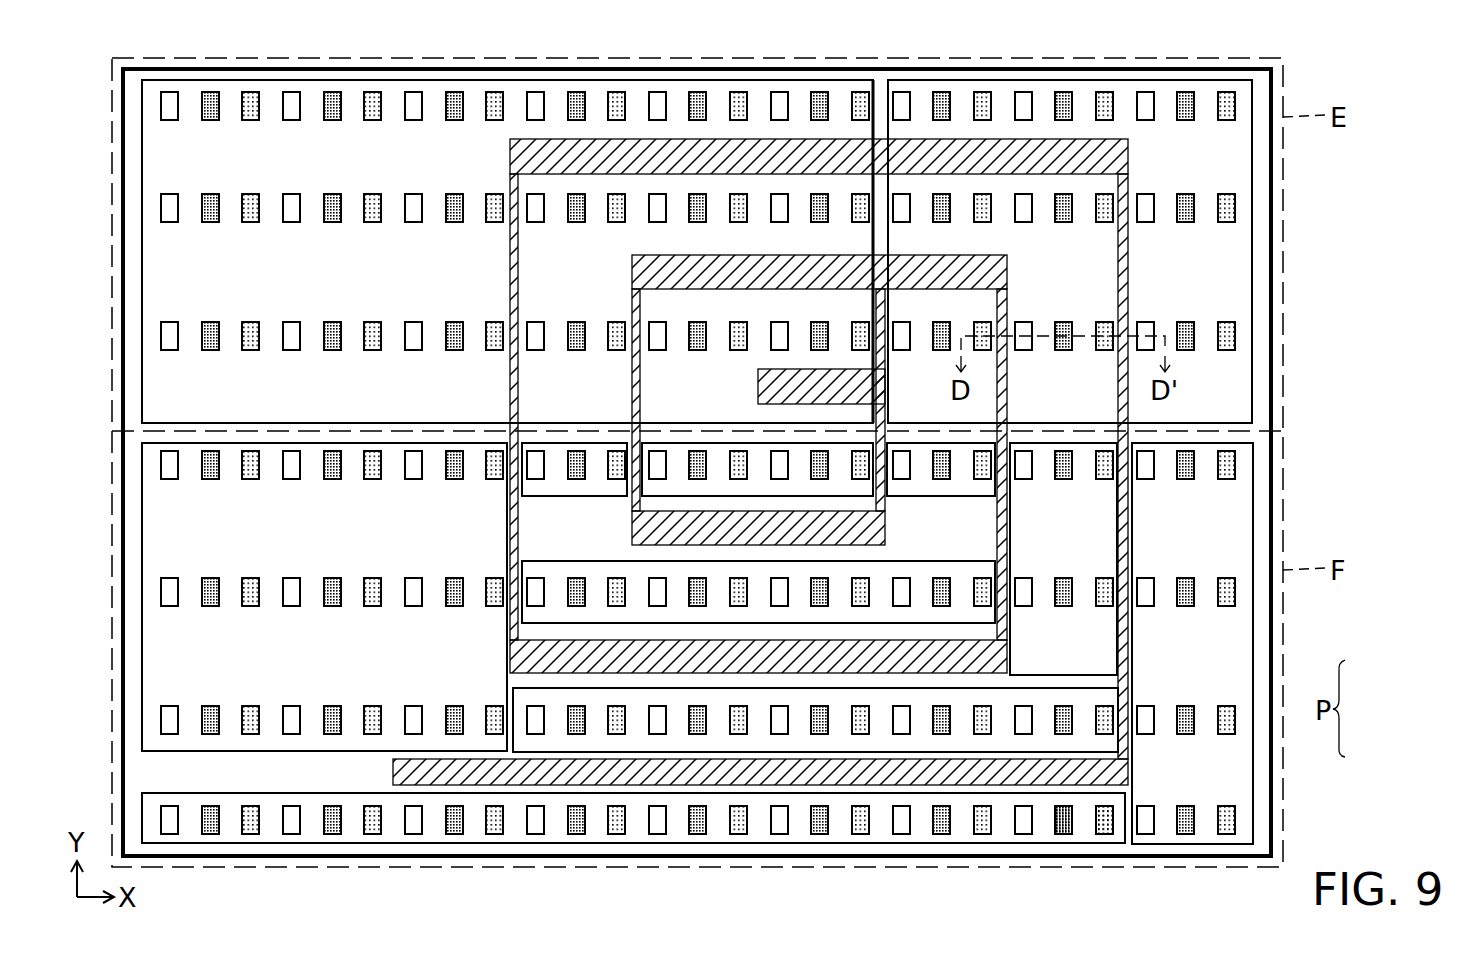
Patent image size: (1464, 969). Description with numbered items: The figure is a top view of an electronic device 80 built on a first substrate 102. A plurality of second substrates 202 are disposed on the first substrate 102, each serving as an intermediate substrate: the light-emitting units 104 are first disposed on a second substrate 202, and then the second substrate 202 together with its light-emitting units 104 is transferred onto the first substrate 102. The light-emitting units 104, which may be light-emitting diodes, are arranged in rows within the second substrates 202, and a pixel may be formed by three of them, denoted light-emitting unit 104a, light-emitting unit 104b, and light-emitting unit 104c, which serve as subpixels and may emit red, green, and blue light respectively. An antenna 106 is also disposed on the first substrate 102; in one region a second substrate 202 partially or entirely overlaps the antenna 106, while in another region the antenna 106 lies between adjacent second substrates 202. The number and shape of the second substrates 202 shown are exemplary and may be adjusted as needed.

The electronic device 80 is at (99, 48).
The first substrate 102 is at (1252, 375).
The light-emitting units 104 is at (290, 105).
The light-emitting unit 104a is at (1020, 837).
The light-emitting unit 104b is at (1062, 832).
The light-emitting unit 104c is at (1103, 832).
The antenna 106 is at (1044, 160).
The second substrate 202 is at (797, 80).